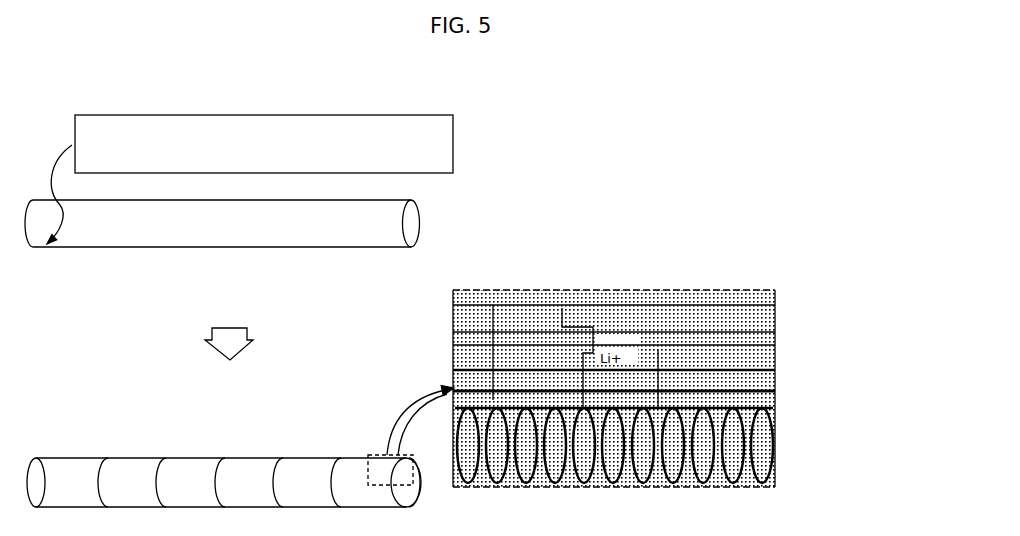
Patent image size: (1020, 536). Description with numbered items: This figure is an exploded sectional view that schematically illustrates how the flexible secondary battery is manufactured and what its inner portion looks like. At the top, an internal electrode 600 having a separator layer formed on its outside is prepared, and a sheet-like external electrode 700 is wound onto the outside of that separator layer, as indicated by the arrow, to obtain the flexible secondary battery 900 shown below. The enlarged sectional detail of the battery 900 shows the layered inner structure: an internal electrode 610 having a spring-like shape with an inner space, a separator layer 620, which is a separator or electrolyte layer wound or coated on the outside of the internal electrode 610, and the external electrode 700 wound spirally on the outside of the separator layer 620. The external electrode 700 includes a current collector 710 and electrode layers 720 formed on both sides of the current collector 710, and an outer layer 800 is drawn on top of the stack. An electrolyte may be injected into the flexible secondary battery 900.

The external electrode 700 is at (303, 115).
The internal electrode having a separator layer formed on the outside thereof 600 is at (208, 247).
The flexible secondary battery 900 is at (129, 448).
The outer protective layer 800 is at (777, 295).
The electrode layers 720 is at (777, 320).
The current collector 710 is at (777, 338).
The separator layer 620 is at (777, 391).
The internal electrode 610 is at (777, 446).